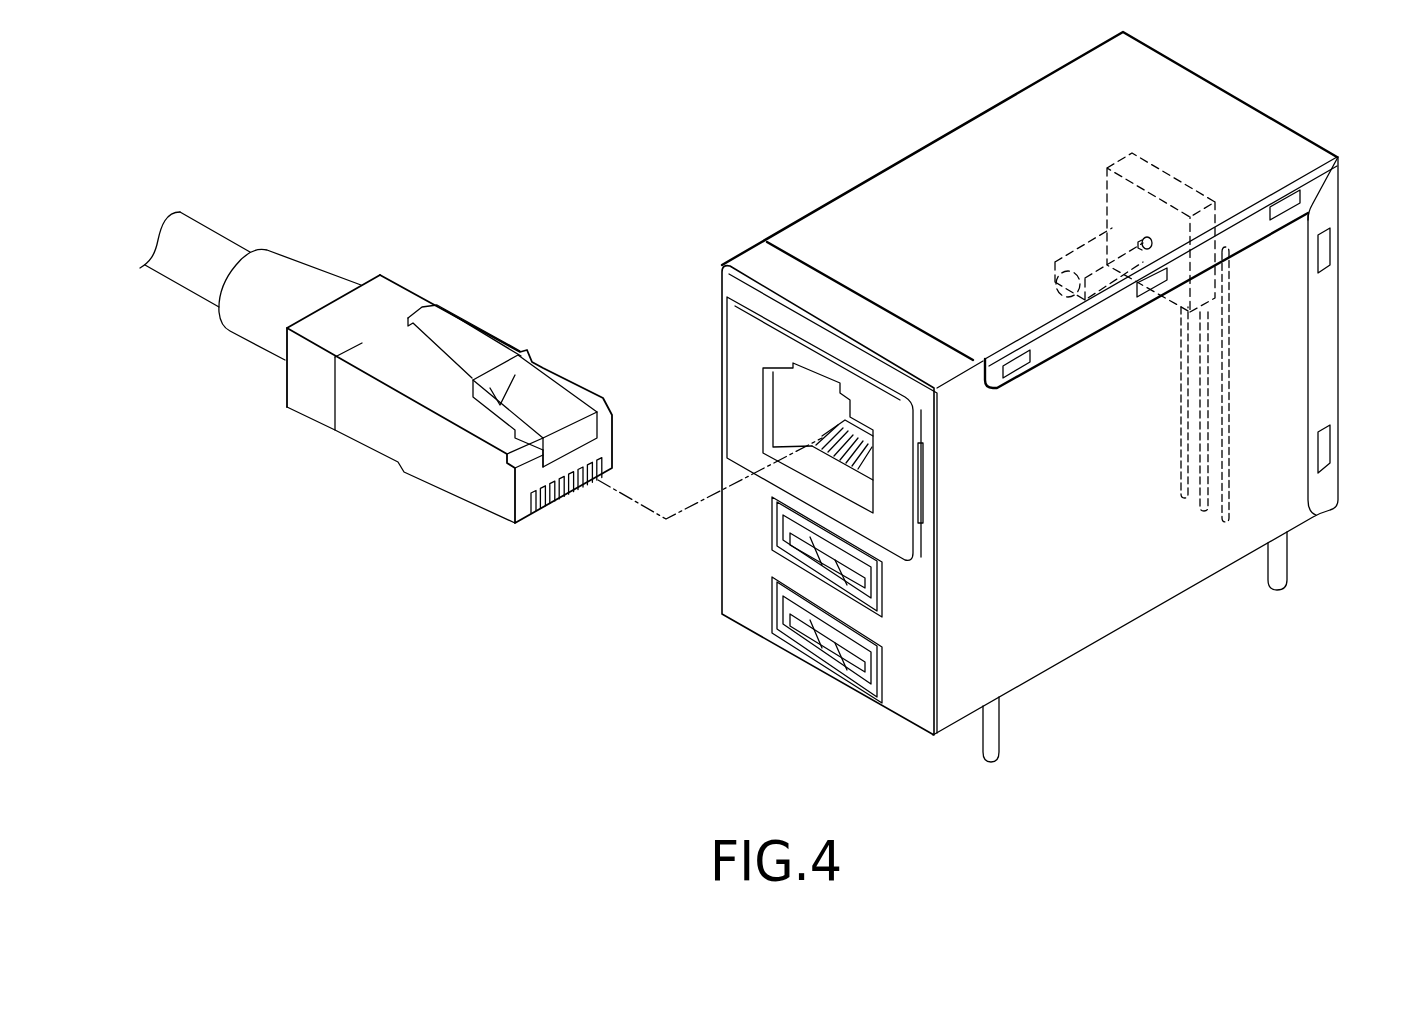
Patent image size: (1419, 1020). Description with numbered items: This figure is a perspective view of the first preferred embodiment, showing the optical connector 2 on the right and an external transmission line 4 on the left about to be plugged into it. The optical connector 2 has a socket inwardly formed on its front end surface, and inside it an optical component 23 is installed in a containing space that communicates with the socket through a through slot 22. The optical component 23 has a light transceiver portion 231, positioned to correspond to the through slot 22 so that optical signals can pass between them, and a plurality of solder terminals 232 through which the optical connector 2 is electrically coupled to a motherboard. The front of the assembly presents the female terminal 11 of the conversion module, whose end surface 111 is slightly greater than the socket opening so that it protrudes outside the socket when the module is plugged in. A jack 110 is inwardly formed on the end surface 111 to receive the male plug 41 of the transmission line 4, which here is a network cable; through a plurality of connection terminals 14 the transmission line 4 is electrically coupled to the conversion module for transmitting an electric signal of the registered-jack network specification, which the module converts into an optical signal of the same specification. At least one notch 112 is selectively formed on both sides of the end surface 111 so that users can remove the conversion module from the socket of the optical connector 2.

The optical connector 2 is at (935, 106).
The transmission line 4 is at (455, 284).
The female terminal 11 is at (722, 378).
The connection terminals 14 is at (820, 430).
The through slot 22 is at (1053, 277).
The optical component 23 is at (1167, 187).
The male plug 41 is at (463, 477).
The jack 110 is at (803, 456).
The end surface 111 is at (738, 339).
The notch 112 is at (923, 505).
The light transceiver portion 231 is at (1108, 213).
The solder terminals 232 is at (1230, 373).